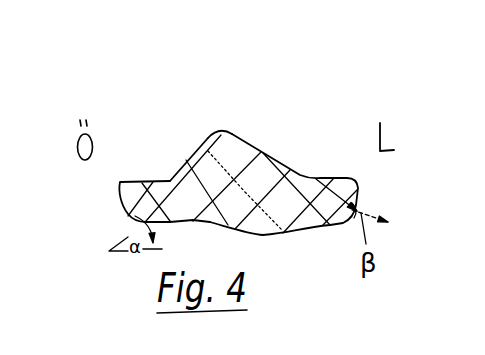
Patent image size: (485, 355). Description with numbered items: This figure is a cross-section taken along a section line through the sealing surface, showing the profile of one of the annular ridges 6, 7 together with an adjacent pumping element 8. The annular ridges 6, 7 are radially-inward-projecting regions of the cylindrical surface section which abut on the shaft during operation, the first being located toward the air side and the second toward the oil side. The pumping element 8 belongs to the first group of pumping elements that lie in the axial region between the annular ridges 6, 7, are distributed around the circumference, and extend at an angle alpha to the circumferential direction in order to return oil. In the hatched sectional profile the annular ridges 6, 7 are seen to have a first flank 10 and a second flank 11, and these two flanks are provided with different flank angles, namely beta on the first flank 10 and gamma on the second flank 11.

The first annular ridge 6 is at (252, 121).
The second annular ridge 7 is at (228, 152).
The pumping element 8 is at (157, 245).
The first flank 10 is at (190, 152).
The second flank 11 is at (263, 152).